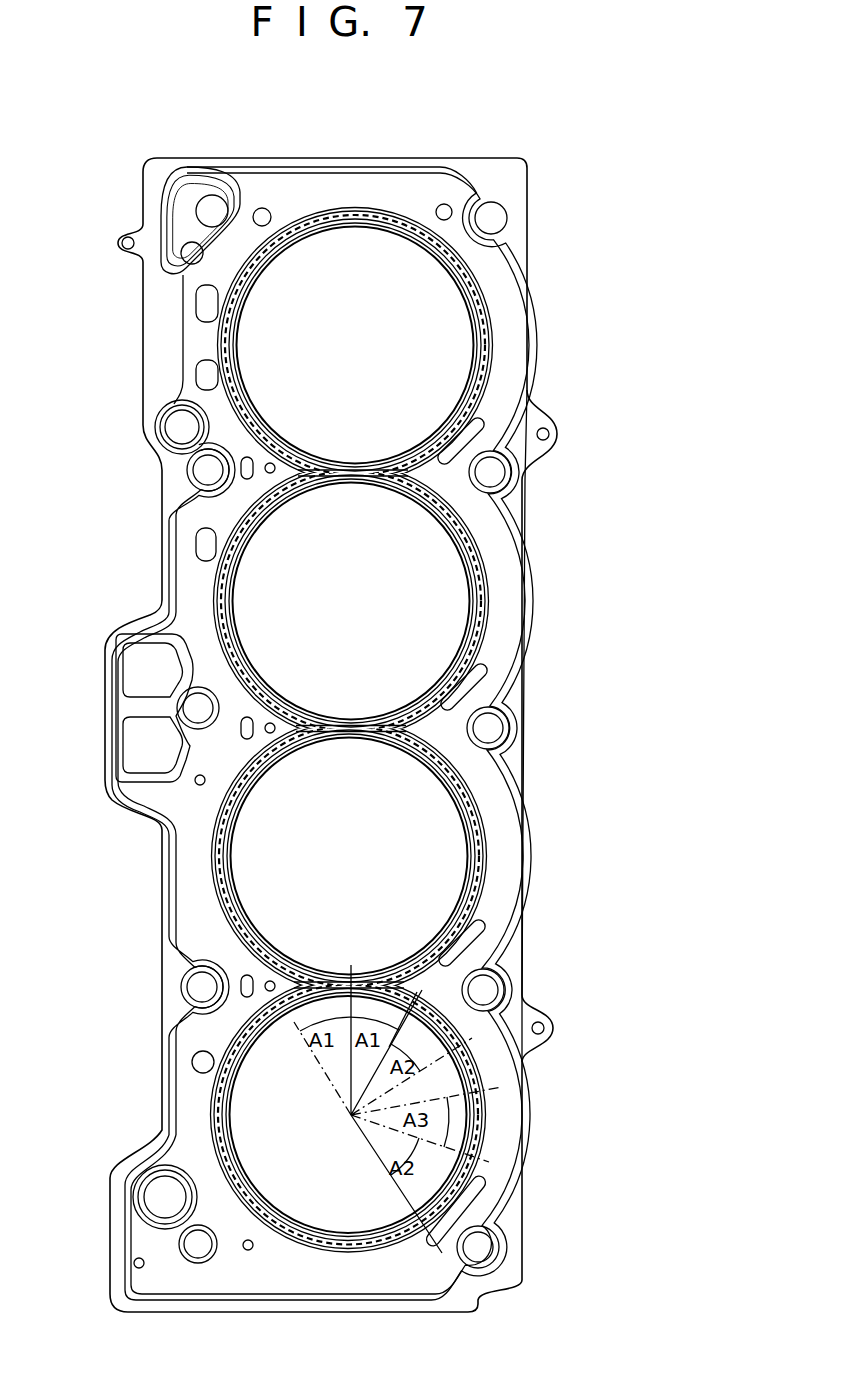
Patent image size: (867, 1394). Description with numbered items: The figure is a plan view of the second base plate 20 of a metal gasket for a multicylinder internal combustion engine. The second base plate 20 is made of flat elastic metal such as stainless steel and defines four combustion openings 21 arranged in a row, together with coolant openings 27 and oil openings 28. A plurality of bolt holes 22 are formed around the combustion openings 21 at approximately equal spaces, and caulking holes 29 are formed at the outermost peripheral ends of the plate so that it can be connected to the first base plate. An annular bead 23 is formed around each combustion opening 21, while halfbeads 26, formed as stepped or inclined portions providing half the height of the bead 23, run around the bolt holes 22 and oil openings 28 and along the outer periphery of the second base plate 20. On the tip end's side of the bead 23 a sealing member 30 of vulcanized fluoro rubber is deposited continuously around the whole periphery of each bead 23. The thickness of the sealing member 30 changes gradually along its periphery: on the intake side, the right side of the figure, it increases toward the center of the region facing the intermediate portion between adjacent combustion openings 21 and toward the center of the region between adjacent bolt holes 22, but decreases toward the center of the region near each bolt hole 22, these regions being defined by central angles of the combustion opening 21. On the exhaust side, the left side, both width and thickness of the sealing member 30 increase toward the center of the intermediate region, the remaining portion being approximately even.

The second base plate 20 is at (505, 160).
The combustion opening 21 is at (398, 224).
The bolt hole 22 is at (200, 218).
The annular bead 23 is at (323, 218).
The halfbead 26 is at (455, 172).
The coolant opening 27 is at (260, 208).
The oil opening 28 is at (185, 258).
The caulking hole 29 is at (122, 244).
The sealing member 30 is at (355, 208).